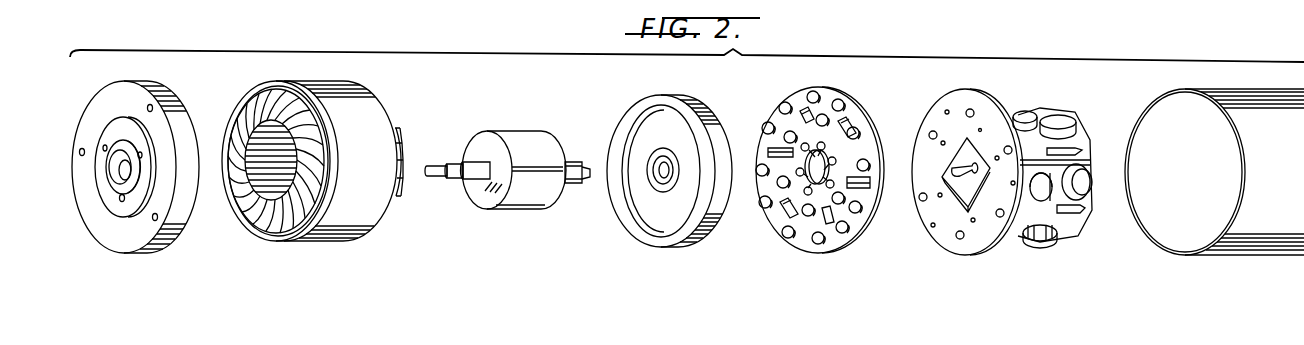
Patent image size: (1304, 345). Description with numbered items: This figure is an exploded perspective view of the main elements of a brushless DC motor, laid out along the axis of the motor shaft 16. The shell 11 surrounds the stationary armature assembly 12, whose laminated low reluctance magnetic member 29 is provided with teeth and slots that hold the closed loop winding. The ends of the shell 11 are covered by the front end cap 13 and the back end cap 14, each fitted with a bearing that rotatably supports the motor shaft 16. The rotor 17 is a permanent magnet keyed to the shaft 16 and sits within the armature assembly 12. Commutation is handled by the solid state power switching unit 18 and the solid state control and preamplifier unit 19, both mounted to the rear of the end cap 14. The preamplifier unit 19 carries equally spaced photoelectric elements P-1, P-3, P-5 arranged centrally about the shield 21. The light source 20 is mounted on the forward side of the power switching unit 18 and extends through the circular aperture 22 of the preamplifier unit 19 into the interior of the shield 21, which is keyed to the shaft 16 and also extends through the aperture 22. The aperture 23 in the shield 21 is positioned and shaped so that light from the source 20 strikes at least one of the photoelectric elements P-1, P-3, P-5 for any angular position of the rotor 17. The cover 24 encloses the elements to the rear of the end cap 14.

The shell 11 is at (325, 243).
The stationary armature assembly 12 is at (268, 233).
The front end cap 13 is at (93, 107).
The back end cap 14 is at (708, 105).
The motor shaft 16 is at (440, 176).
The rotor 17 is at (515, 208).
The solid state power switching unit 18 is at (1027, 258).
The solid state control and preamplifier unit 19 is at (798, 261).
The light source 20 is at (950, 197).
The shield 21 is at (572, 184).
The circular aperture 22 is at (766, 158).
The aperture 23 is at (590, 182).
The cover 24 is at (1224, 262).
The low reluctance magnetic member 29 is at (279, 83).
The photoelectric element P-1 is at (797, 202).
The photoelectric element P-3 is at (780, 125).
The photoelectric element P-5 is at (835, 172).